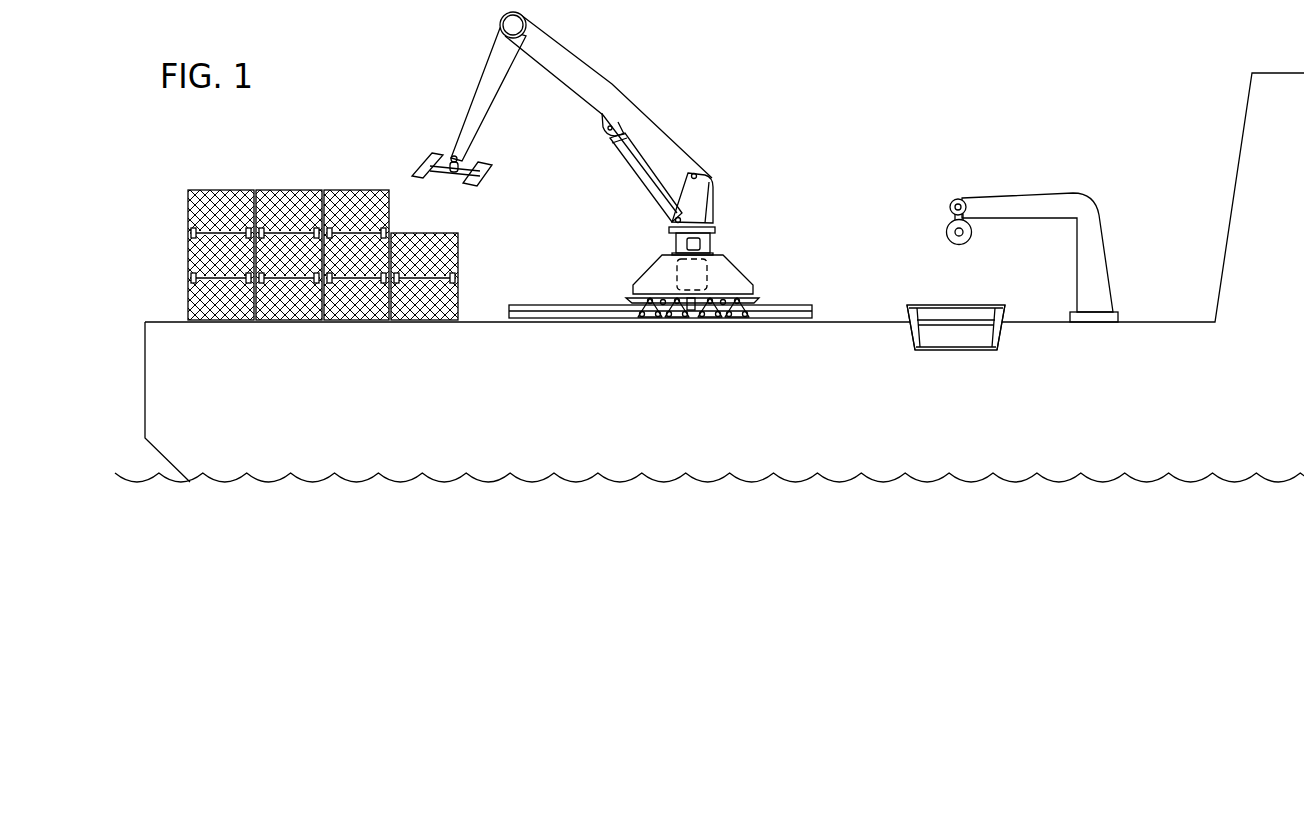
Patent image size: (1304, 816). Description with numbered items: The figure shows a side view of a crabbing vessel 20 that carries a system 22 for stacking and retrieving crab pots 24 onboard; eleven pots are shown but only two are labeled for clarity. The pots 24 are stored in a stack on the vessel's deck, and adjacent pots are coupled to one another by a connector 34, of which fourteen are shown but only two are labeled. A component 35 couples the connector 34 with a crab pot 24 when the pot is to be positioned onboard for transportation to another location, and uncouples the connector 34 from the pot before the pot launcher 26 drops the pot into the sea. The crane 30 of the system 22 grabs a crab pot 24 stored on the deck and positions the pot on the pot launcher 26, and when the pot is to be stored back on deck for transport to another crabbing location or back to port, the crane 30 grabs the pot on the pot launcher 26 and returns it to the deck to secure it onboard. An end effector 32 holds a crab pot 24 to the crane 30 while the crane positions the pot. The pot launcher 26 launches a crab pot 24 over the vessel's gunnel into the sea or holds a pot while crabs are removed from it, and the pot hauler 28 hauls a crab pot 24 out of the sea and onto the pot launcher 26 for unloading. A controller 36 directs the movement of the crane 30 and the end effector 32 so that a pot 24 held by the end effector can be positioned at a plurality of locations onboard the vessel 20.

The crabbing vessel 20 is at (836, 174).
The system 22 is at (440, 114).
The crab pot 24 is at (340, 190).
The pot launcher 26 is at (922, 302).
The pot hauler 28 is at (950, 220).
The crane 30 is at (668, 90).
The end effector 32 is at (466, 163).
The connector 34 is at (270, 228).
The component 35 is at (905, 307).
The controller 36 is at (707, 273).